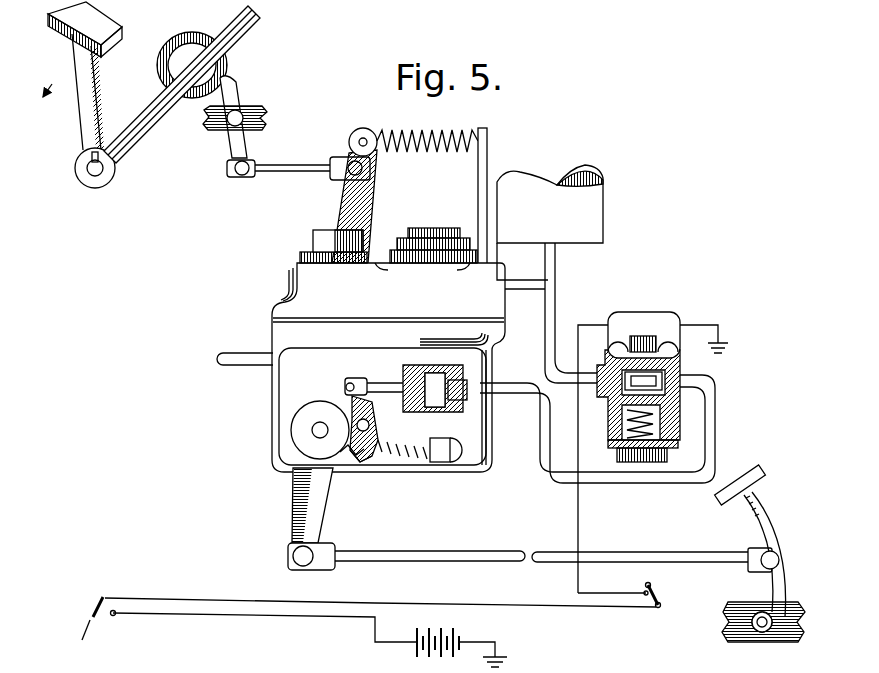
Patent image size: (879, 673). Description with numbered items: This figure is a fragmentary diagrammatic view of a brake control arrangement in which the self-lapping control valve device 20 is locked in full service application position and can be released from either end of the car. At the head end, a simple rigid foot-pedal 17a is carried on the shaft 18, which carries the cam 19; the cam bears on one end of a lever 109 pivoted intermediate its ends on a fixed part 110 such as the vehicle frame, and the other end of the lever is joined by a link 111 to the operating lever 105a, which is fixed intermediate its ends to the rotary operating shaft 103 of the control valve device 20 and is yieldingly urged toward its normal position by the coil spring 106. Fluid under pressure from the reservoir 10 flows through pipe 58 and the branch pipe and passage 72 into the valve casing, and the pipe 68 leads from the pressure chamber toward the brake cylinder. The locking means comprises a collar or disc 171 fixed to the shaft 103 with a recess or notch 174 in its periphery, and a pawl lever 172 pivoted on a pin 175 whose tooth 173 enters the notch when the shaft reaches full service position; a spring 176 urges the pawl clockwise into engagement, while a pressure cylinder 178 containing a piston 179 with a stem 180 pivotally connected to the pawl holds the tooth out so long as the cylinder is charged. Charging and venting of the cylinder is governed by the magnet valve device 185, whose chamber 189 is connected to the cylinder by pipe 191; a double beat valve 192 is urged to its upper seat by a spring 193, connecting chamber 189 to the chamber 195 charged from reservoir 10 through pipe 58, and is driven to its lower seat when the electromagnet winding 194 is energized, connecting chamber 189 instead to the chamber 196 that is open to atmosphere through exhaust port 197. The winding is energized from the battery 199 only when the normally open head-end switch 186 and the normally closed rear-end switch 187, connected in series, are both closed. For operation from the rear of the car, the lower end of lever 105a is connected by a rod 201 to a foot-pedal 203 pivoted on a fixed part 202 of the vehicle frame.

The reservoir 10 is at (607, 206).
The rigid foot-pedal 17a is at (86, 92).
The foot-pedal-operated shaft 18 is at (238, 42).
The cam 19 is at (176, 57).
The control valve device 20 is at (272, 303).
The pipe 58 is at (552, 258).
The pipe 68 is at (234, 354).
The branch pipe and passage 72 is at (528, 288).
The rotary operating shaft 103 is at (318, 431).
The operating lever 105a is at (338, 218).
The coil spring 106 is at (437, 156).
The lever 109 is at (250, 156).
The fixed part 110 is at (266, 123).
The link 111 is at (282, 173).
The collar or disc 171 is at (292, 422).
The pawl lever 172 is at (380, 462).
The tooth 173 is at (362, 462).
The recess or notch 174 is at (318, 474).
The pin 175 is at (370, 428).
The spring 176 is at (426, 462).
The pressure cylinder 178 is at (465, 378).
The piston 179 is at (423, 368).
The stem 180 is at (402, 384).
The magnet valve device 185 is at (655, 437).
The switch 186 is at (94, 606).
The switch 187 is at (663, 601).
The chamber 189 is at (676, 400).
The pipe 191 is at (552, 478).
The double beat valve 192 is at (682, 366).
The spring 193 is at (666, 450).
The electromagnet winding 194 is at (660, 322).
The chamber 195 is at (612, 420).
The chamber 196 is at (615, 348).
The exhaust port 197 is at (670, 350).
The battery 199 is at (433, 636).
The rod 201 is at (458, 556).
The fixed part 202 is at (722, 635).
The foot-pedal 203 is at (762, 536).